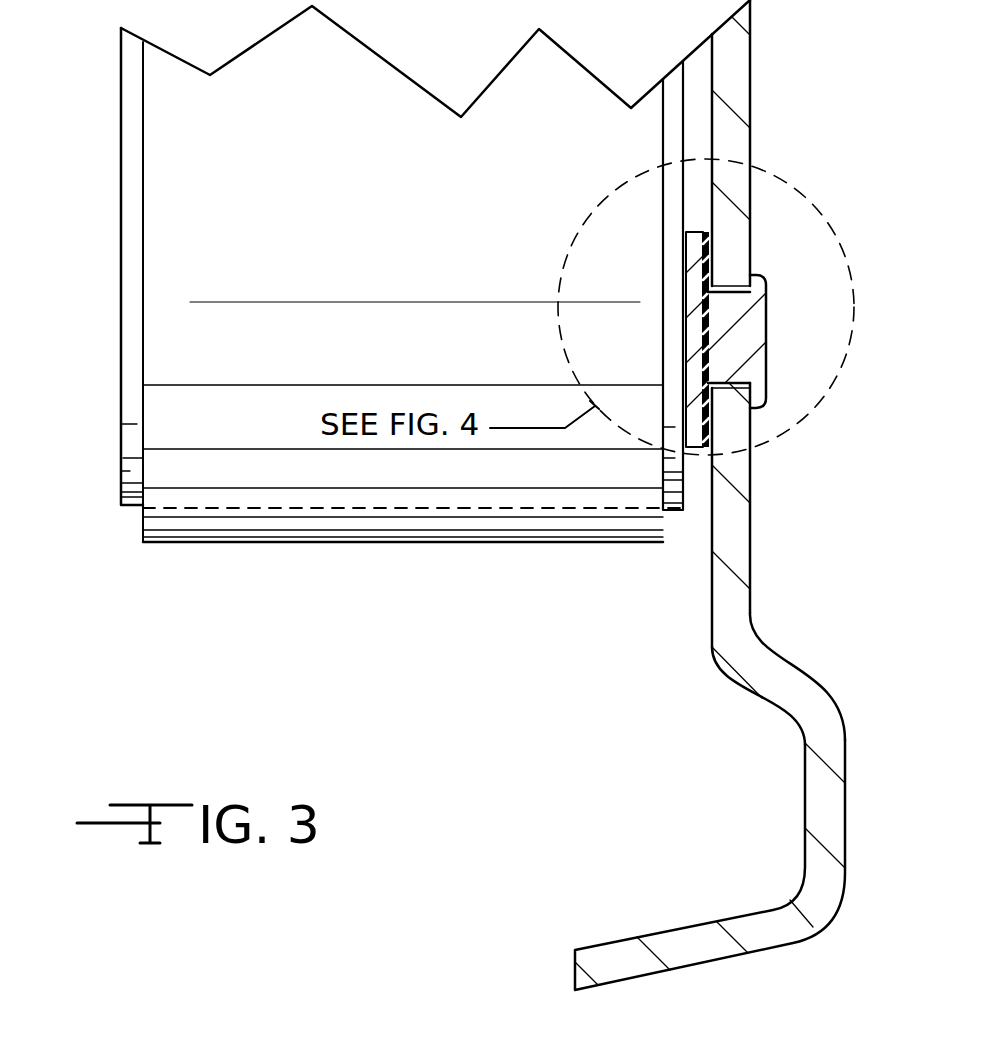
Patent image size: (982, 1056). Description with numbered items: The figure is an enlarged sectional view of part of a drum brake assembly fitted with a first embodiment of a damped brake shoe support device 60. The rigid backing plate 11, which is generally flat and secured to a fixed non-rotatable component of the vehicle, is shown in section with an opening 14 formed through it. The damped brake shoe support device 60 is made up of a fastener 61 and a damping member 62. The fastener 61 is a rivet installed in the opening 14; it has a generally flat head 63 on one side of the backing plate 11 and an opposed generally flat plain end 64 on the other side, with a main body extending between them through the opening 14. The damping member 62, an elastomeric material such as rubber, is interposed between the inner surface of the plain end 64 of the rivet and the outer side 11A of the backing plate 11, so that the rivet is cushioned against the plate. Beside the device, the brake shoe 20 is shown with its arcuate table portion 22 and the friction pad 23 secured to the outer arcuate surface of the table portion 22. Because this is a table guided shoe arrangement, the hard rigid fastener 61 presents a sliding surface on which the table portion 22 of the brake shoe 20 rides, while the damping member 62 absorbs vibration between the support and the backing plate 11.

The backing plate 11 is at (710, 495).
The outer side of the backing plate 11A is at (710, 638).
The opening 14 is at (722, 383).
The brake shoe 20 is at (381, 310).
The table portion 22 is at (128, 471).
The friction pad 23 is at (200, 525).
The damped brake shoe support device 60 is at (712, 331).
The fastener 61 is at (776, 302).
The damping member 62 is at (706, 232).
The head 63 is at (752, 332).
The plain end 64 is at (690, 292).